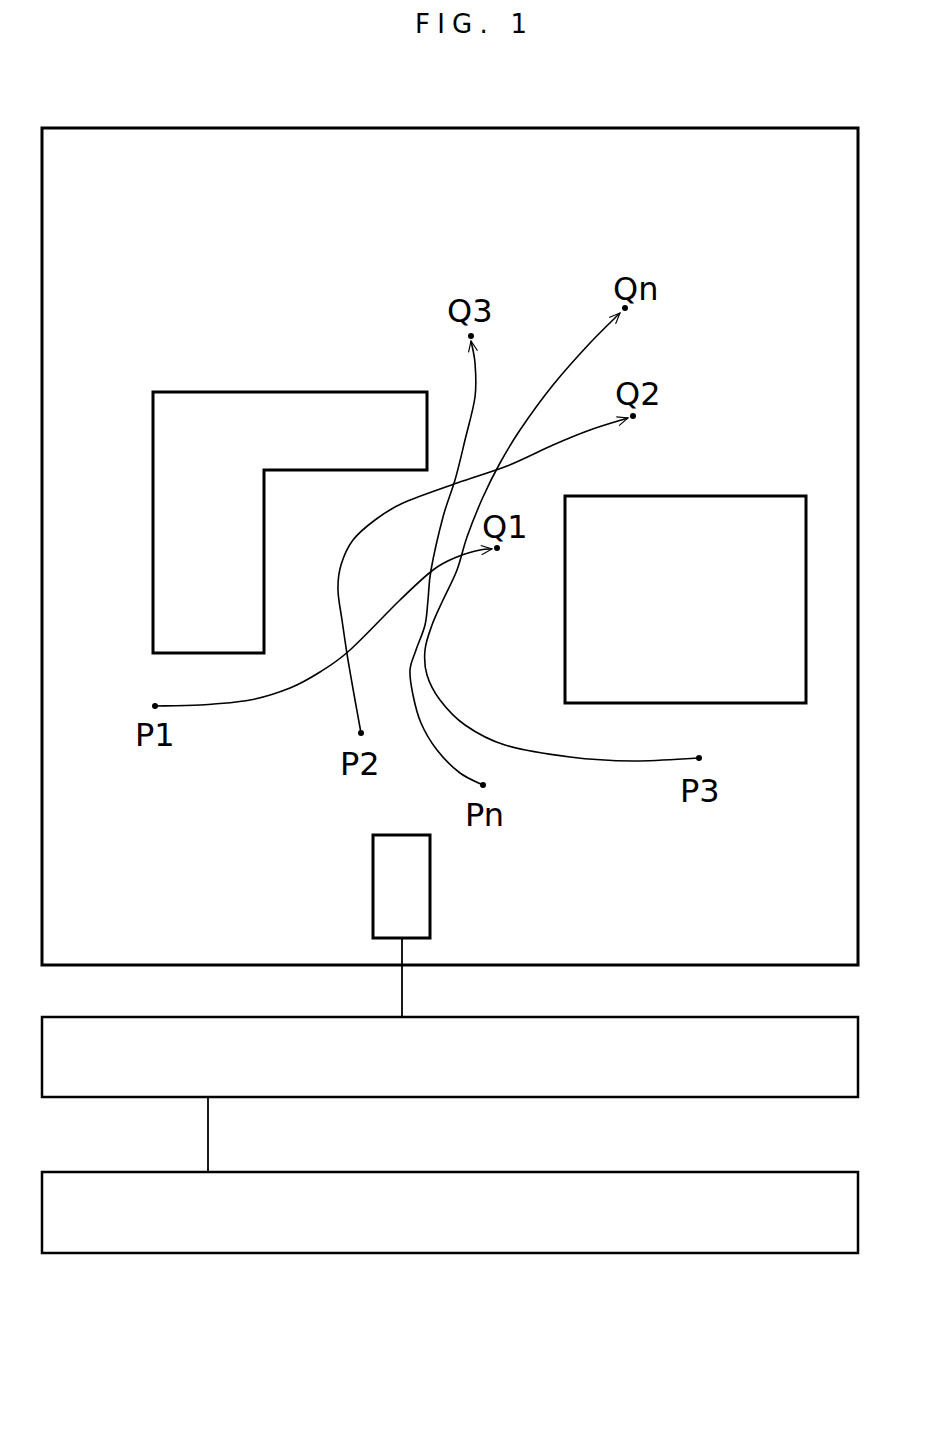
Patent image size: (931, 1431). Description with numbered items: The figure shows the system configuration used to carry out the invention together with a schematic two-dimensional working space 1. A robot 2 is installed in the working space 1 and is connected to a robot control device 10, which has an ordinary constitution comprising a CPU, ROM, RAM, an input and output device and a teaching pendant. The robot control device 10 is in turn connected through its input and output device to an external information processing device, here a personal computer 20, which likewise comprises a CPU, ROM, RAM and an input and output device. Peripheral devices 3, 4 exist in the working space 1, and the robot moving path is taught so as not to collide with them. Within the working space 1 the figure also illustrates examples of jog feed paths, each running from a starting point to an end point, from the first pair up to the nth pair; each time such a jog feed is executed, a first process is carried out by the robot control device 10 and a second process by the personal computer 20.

The working space 1 is at (527, 126).
The robot 2 is at (430, 896).
The peripheral device 3 is at (712, 495).
The peripheral device 4 is at (268, 392).
The robot control device 10 is at (542, 1097).
The personal computer 20 is at (542, 1253).